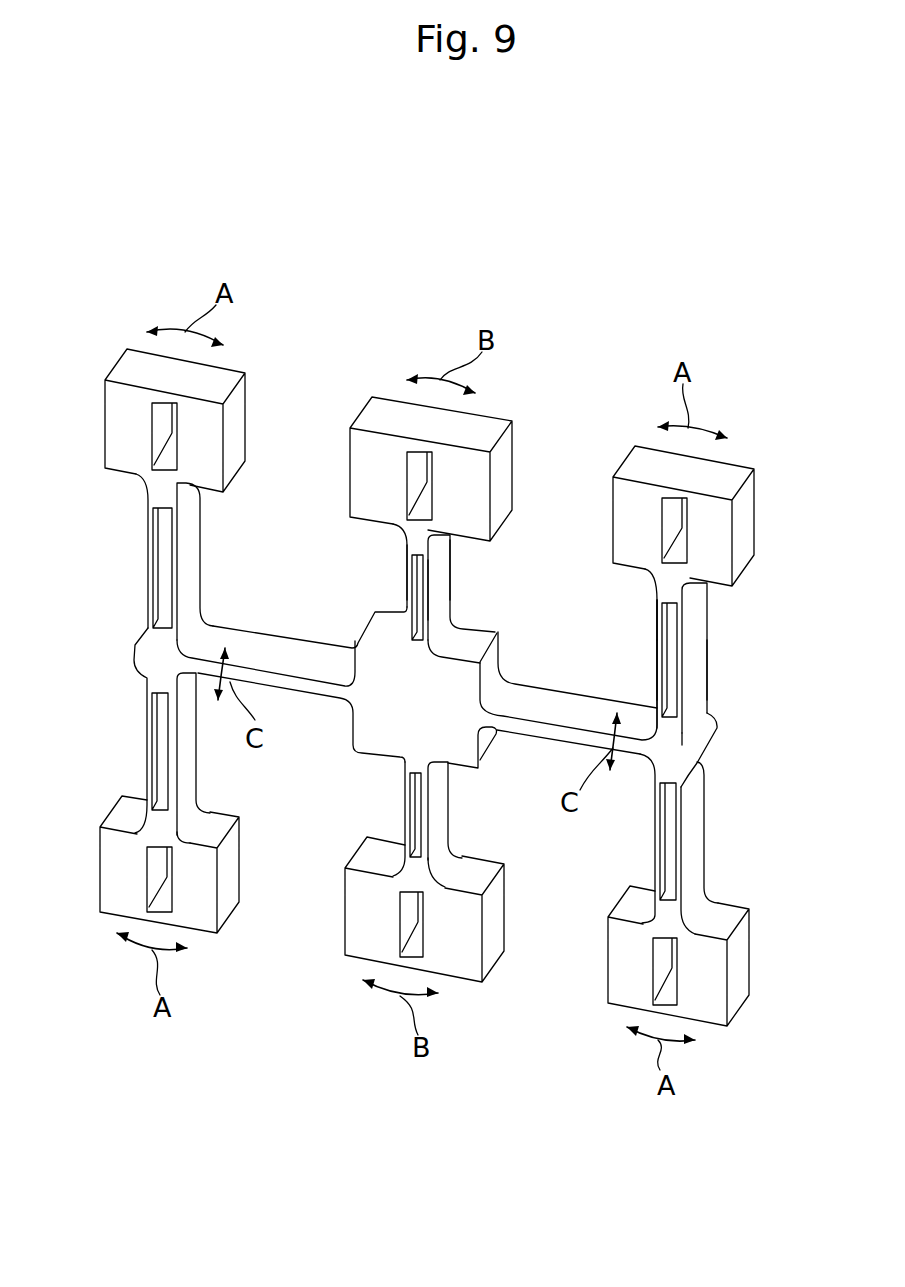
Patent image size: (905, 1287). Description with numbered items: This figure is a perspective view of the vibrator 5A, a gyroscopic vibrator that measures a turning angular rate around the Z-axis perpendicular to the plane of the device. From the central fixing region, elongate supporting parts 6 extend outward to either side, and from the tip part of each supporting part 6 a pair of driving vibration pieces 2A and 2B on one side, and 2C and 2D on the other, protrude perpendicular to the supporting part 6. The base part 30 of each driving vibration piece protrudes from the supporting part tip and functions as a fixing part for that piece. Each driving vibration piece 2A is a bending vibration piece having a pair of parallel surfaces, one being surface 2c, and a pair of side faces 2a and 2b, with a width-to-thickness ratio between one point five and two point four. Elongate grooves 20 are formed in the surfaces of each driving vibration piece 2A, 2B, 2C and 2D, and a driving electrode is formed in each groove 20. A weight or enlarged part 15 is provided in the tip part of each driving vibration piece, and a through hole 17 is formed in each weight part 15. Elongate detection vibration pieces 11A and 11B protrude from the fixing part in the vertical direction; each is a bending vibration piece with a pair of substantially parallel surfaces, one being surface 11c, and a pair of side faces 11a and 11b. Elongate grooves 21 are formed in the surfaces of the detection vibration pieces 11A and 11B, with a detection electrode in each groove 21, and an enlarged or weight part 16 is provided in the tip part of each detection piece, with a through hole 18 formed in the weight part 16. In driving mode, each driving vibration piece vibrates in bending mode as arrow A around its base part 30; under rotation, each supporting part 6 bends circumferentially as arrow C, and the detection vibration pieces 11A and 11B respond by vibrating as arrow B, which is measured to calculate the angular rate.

The vibrator 5A is at (718, 418).
The weight part 15 is at (120, 442).
The weight part 16 is at (490, 432).
The through hole 17 is at (163, 420).
The through hole 18 is at (415, 465).
The driving vibration piece 2A is at (707, 633).
The driving vibration piece 2B is at (690, 832).
The driving vibration piece 2C is at (147, 752).
The driving vibration piece 2D is at (147, 563).
The side face 2a is at (700, 672).
The side face 2b is at (657, 655).
The surface 2c is at (668, 593).
The elongate groove 20 is at (157, 720).
The elongate groove 21 is at (428, 583).
The supporting part 6 is at (300, 652).
The detection vibration piece 11A is at (450, 602).
The detection vibration piece 11B is at (440, 838).
The side face 11a is at (440, 556).
The side face 11b is at (421, 583).
The surface 11c is at (413, 547).
The base part 30 is at (673, 752).